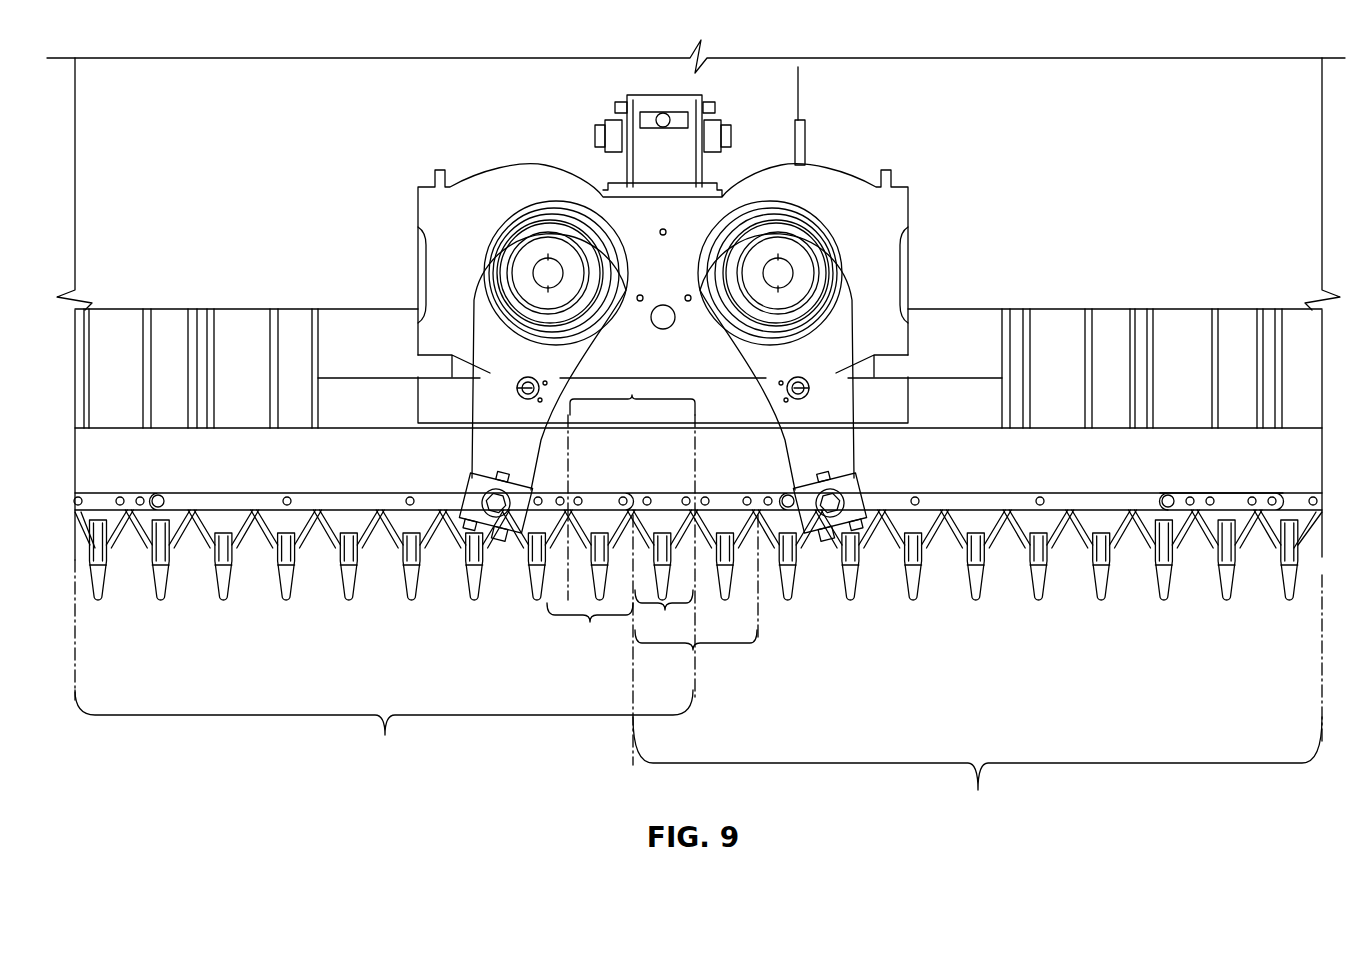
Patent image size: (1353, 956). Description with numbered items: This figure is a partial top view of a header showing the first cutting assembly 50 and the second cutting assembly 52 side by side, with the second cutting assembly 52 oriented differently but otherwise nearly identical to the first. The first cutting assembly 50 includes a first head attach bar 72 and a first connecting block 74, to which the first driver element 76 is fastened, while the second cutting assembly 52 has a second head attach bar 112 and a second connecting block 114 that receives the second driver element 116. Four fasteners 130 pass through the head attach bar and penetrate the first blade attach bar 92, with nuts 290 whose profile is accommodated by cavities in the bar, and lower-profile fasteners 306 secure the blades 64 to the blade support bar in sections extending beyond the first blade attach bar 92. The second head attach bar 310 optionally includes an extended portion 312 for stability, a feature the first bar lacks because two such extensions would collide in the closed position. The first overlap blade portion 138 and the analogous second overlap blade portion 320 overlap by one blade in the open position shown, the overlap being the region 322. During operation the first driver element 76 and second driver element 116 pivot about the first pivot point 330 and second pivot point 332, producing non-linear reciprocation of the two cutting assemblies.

The first cutting assembly 50 is at (977, 768).
The second cutting assembly 52 is at (384, 728).
The blades 64 is at (1033, 518).
The first head attach bar 72 is at (1110, 492).
The first connecting block 74 is at (860, 486).
The first driver element 76 is at (819, 355).
The first blade attach bar 92 is at (1237, 496).
The second head attach bar 112 is at (318, 512).
The second connecting block 114 is at (510, 545).
The second driver element 116 is at (507, 355).
The fasteners 130 is at (287, 494).
The first overlap blade portion 138 is at (693, 650).
The nuts 290 is at (141, 494).
The lower-profile fastener 306 is at (703, 496).
The second head attach bar 310 is at (103, 497).
The extended portion 312 is at (590, 629).
The second overlap blade portion 320 is at (632, 396).
The region of overlap 322 is at (664, 616).
The first pivot point 330 is at (811, 388).
The second pivot point 332 is at (515, 388).